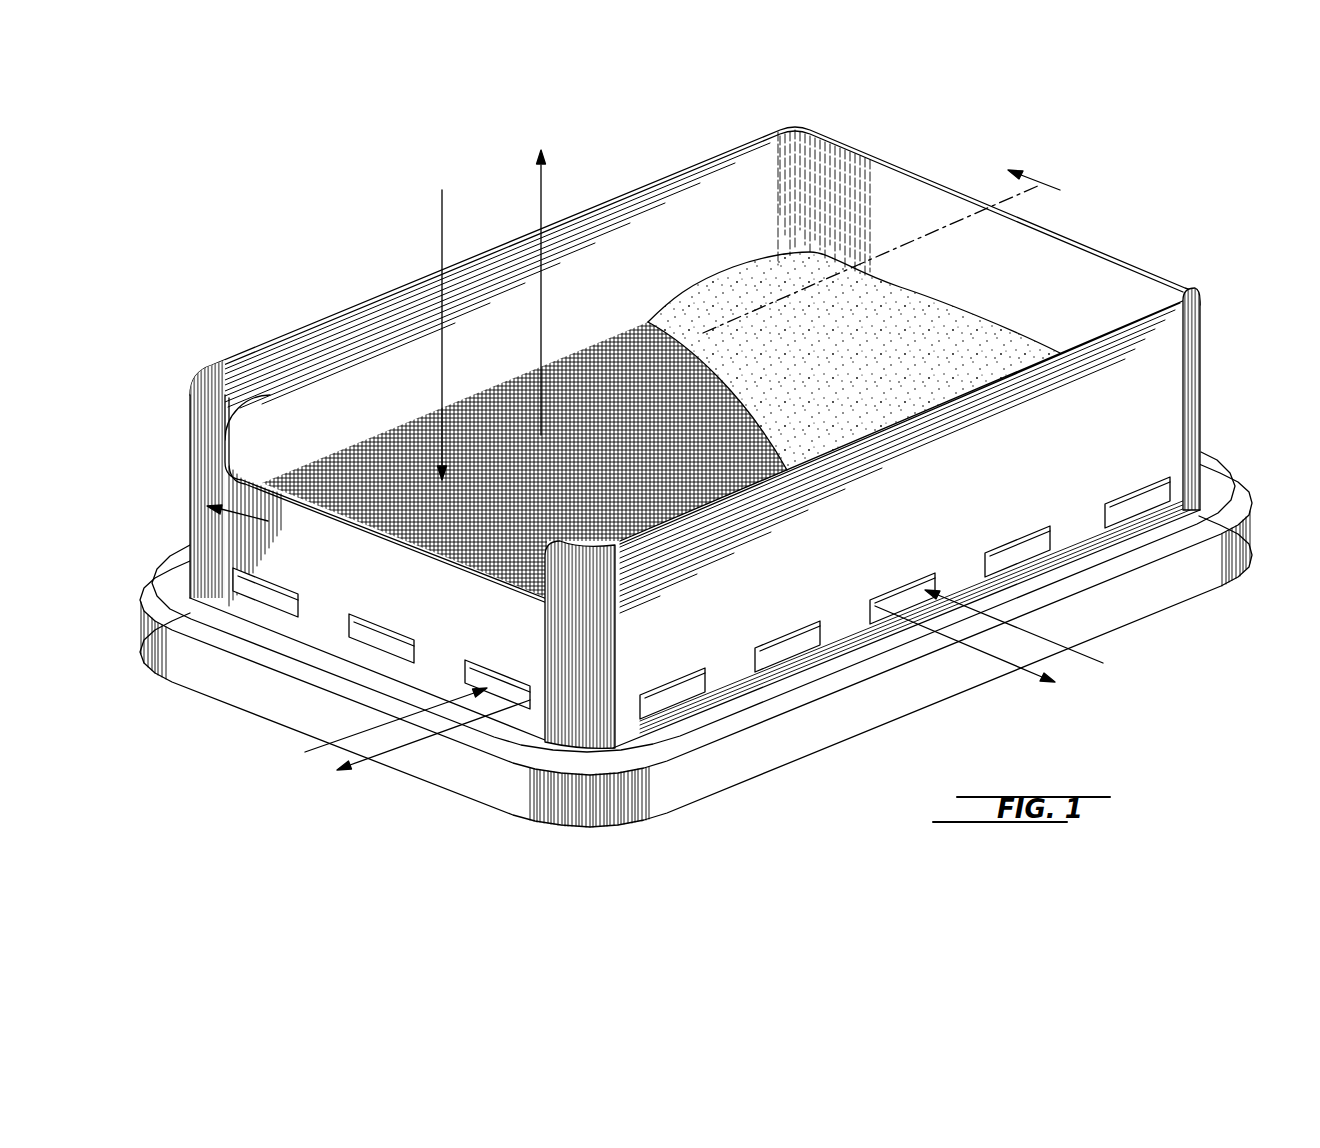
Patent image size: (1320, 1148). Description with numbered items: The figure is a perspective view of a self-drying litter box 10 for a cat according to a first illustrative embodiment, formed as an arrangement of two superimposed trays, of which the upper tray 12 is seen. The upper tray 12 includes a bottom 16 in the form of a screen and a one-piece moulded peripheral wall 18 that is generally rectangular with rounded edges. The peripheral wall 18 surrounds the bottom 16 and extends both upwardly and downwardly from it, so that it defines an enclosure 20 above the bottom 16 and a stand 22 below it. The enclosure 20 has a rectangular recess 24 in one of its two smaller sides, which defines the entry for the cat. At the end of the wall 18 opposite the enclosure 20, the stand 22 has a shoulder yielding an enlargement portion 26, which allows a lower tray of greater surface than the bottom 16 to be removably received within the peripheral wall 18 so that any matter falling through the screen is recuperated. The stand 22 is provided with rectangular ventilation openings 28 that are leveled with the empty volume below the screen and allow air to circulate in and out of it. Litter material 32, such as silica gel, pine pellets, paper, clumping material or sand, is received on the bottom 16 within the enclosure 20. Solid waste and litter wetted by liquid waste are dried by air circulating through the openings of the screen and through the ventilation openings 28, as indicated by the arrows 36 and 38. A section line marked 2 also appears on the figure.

The self-drying litter box 10 is at (299, 251).
The upper tray 12 is at (696, 662).
The bottom 16 is at (595, 415).
The peripheral wall 18 is at (705, 457).
The enclosure 20 is at (490, 272).
The stand 22 is at (700, 776).
The rectangular recess 24 is at (238, 455).
The enlargement portion 26 is at (1205, 518).
The ventilation openings 28 is at (280, 598).
The litter material 32 is at (843, 310).
The arrows 36 is at (440, 245).
The arrows 38 is at (368, 762).
The section line 2- 2 is at (1052, 189).